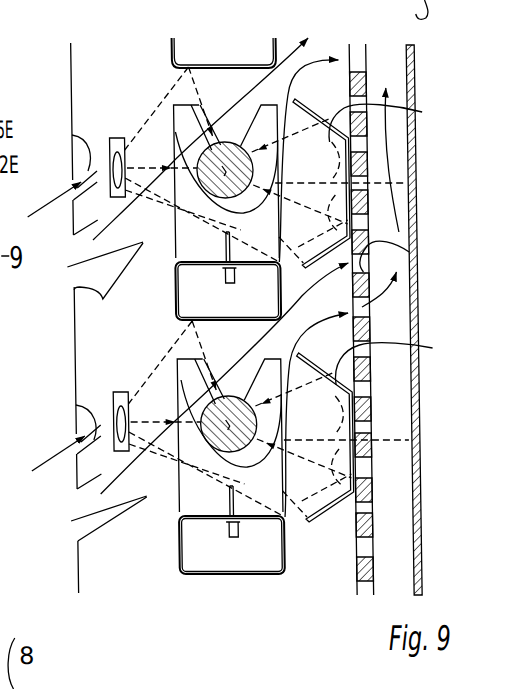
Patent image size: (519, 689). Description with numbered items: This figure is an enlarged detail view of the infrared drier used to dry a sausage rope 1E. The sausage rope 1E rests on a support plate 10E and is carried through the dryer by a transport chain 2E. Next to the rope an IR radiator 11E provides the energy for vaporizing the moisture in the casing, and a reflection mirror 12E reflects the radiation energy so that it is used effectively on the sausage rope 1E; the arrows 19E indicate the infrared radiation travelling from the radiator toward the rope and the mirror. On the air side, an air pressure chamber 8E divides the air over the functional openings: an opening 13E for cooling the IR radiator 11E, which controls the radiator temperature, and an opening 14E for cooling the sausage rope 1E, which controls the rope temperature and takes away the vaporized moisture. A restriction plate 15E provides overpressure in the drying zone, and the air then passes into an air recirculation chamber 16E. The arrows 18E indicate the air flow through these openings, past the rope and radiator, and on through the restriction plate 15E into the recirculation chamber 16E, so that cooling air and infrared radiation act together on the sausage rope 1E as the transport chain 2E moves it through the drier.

The sausage rope 1E is at (198, 112).
The transport chain 2E is at (227, 276).
The air pressure chamber 8E is at (77, 74).
The support plate 10E is at (176, 132).
The IR radiator 11E is at (110, 138).
The reflection mirror 12E is at (394, 240).
The opening for cooling IR radiator 13E is at (72, 136).
The opening for cooling sausage rope 14E is at (73, 305).
The restriction plate 15E is at (351, 566).
The air recirculation chamber 16E is at (392, 538).
The arrows 18E is at (408, 252).
The arrows 19E is at (430, 440).